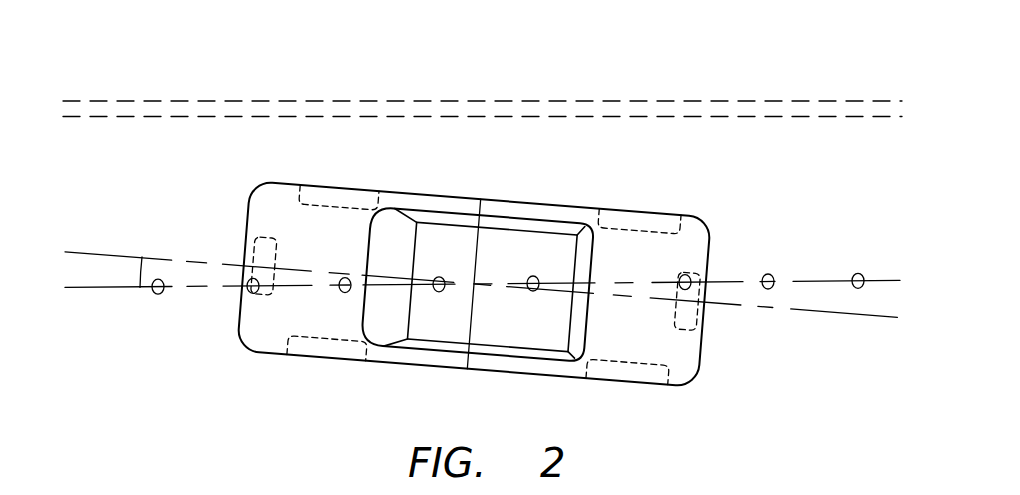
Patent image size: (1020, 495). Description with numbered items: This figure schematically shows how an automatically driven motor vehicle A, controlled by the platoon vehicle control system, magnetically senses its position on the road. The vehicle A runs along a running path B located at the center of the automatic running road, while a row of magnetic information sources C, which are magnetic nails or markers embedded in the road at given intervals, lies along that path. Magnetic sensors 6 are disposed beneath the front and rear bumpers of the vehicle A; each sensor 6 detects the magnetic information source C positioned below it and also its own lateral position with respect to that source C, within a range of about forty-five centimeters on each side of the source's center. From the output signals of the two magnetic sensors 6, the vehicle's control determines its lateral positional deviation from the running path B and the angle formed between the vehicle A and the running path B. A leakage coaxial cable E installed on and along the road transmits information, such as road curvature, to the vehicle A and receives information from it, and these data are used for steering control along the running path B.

The automatically driven motor vehicle A is at (546, 195).
The running path B is at (892, 281).
The magnetic information sources C is at (157, 295).
The leakage coaxial cable E is at (642, 91).
The magnetic sensors 6 is at (250, 248).